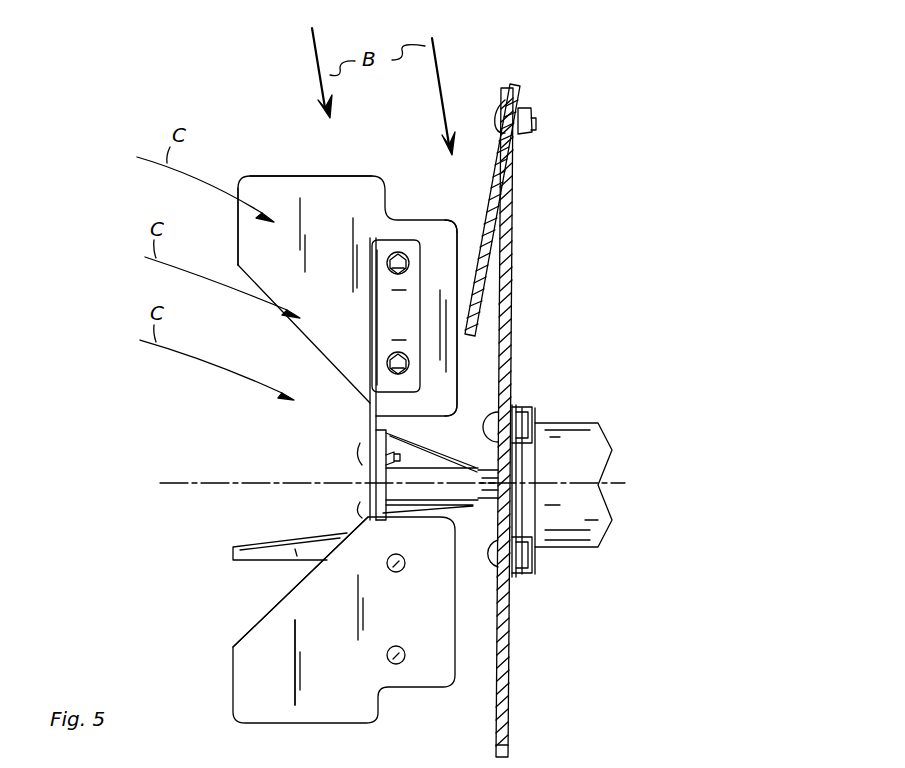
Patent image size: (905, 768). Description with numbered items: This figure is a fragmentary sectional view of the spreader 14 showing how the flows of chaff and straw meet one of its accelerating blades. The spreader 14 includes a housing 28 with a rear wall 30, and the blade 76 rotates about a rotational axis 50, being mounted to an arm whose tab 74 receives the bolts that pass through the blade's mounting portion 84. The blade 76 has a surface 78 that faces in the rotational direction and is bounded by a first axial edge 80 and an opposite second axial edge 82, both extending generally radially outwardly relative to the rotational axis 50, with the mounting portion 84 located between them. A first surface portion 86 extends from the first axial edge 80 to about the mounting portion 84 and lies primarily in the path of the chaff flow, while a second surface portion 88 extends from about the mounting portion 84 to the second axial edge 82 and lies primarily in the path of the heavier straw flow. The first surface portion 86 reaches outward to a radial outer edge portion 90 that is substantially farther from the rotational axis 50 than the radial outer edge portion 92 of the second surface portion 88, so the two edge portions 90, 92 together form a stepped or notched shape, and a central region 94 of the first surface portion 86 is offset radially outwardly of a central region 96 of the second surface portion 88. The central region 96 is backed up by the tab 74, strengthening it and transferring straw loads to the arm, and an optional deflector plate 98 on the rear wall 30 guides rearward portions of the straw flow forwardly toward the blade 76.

The spreader 14 is at (112, 552).
The housing 28 is at (506, 733).
The rear wall 30 is at (510, 353).
The rotational axis 50 is at (208, 483).
The tab 74 is at (418, 263).
The blade 76 is at (283, 176).
The surface 78 is at (344, 664).
The first axial edge 80 is at (238, 240).
The second axial edge 82 is at (458, 385).
The mounting portion 84 is at (394, 232).
The first surface portion 86 is at (283, 630).
The second surface portion 88 is at (443, 630).
The radial outer edge portion 90 is at (352, 176).
The radial outer edge portion 92 is at (440, 220).
The central region 94 is at (283, 677).
The central region 96 is at (418, 588).
The deflector plate 98 is at (477, 273).